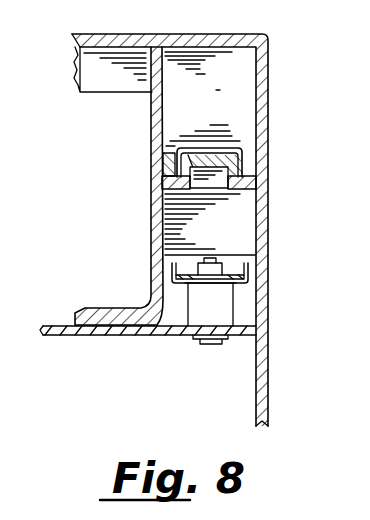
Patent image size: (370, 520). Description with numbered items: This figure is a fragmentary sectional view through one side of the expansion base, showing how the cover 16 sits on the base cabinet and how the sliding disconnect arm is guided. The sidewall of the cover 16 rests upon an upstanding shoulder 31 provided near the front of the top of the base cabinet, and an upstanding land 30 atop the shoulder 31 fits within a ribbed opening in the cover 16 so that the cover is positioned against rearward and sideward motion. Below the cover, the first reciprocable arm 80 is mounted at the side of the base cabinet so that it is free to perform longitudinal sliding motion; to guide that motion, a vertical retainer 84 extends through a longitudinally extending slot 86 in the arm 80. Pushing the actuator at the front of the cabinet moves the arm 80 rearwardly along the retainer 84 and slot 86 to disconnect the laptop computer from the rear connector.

The cover 16 is at (272, 82).
The upstanding land 30 is at (170, 158).
The upstanding shoulder 31 is at (157, 221).
The first reciprocable arm 80 is at (248, 274).
The vertical retainer 84 is at (216, 262).
The longitudinally extending slot 86 is at (203, 284).